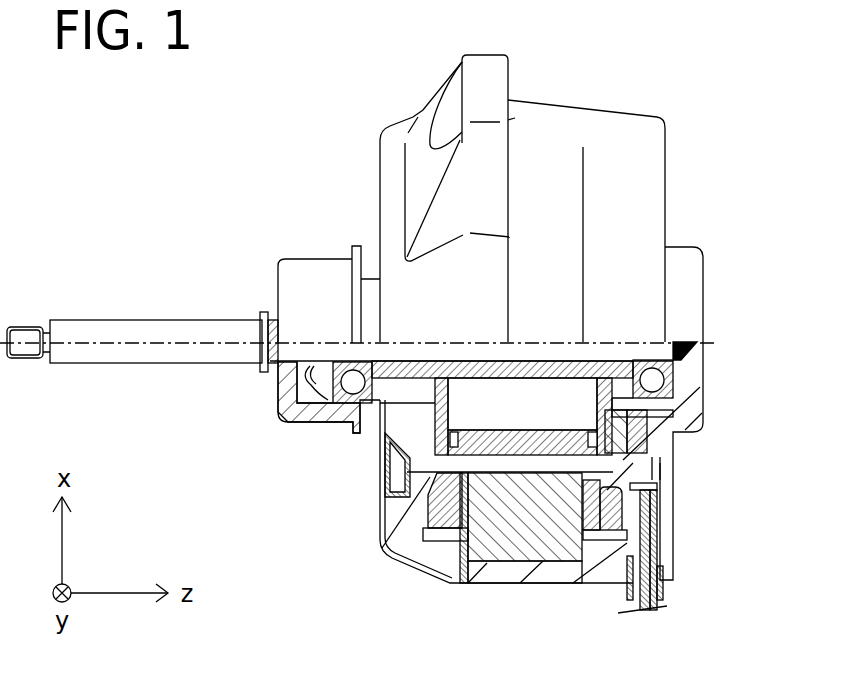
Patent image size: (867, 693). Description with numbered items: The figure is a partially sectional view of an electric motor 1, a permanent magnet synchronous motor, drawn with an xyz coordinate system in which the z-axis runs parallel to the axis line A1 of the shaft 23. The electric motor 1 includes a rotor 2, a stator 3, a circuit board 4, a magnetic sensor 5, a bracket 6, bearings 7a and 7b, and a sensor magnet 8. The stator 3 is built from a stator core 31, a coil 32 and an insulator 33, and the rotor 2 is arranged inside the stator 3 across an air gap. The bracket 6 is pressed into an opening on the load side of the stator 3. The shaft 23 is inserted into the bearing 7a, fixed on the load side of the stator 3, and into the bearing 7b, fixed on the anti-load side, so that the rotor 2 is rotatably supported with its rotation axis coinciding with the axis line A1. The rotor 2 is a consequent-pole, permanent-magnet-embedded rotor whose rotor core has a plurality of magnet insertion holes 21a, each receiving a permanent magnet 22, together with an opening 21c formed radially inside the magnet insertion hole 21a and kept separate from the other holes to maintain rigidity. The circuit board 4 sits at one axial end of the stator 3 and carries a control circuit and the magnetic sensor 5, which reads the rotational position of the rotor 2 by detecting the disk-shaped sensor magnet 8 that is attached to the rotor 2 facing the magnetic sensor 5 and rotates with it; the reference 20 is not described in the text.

The electric motor 1 is at (320, 72).
The rotor 2 is at (417, 443).
The stator 3 is at (600, 150).
The circuit board 4 is at (623, 427).
The magnetic sensor 5 is at (640, 433).
The bracket 6 is at (407, 493).
The bearing 7a is at (337, 403).
The bearing 7b is at (680, 377).
The sensor magnet 8 is at (657, 423).
The motor 20 is at (437, 410).
The magnet insertion hole 21a is at (653, 470).
The opening 21c is at (517, 405).
The permanent magnet 22 is at (530, 433).
The shaft 23 is at (182, 330).
The stator core 31 is at (500, 540).
The coil 32 is at (455, 538).
The insulator 33 is at (462, 545).
The axis line A1 is at (133, 345).